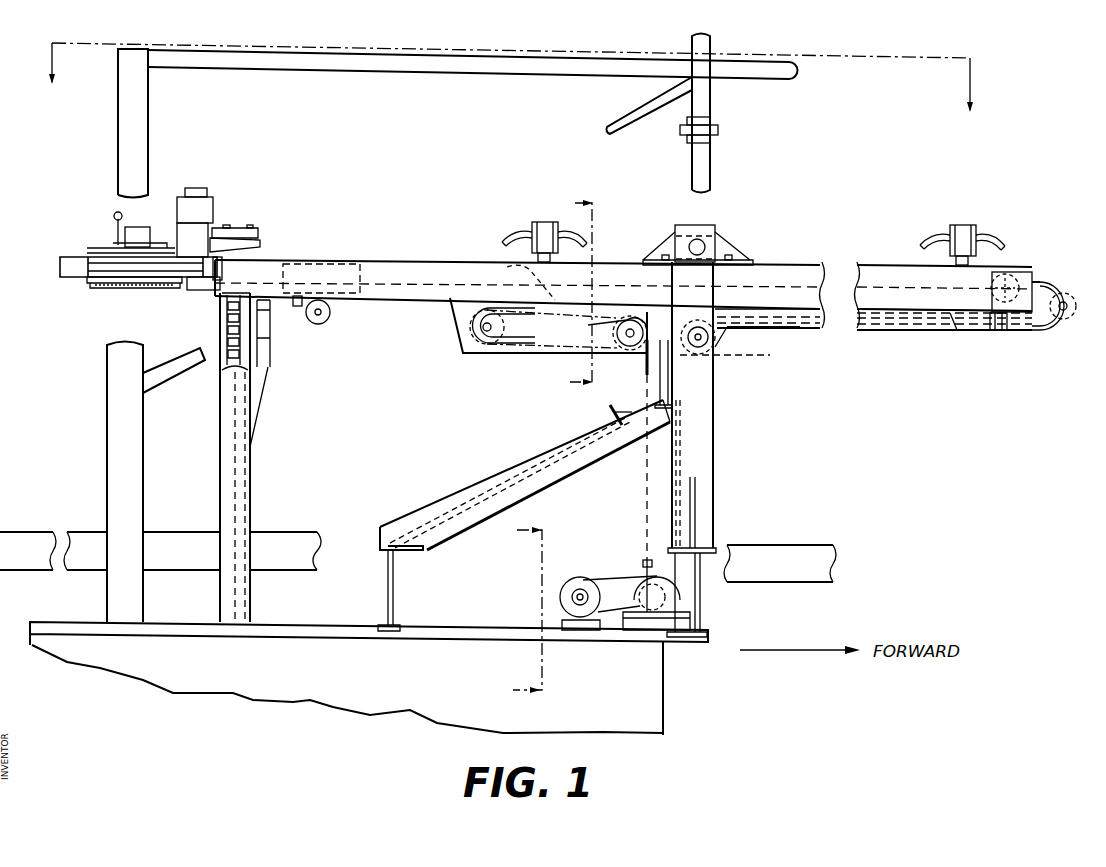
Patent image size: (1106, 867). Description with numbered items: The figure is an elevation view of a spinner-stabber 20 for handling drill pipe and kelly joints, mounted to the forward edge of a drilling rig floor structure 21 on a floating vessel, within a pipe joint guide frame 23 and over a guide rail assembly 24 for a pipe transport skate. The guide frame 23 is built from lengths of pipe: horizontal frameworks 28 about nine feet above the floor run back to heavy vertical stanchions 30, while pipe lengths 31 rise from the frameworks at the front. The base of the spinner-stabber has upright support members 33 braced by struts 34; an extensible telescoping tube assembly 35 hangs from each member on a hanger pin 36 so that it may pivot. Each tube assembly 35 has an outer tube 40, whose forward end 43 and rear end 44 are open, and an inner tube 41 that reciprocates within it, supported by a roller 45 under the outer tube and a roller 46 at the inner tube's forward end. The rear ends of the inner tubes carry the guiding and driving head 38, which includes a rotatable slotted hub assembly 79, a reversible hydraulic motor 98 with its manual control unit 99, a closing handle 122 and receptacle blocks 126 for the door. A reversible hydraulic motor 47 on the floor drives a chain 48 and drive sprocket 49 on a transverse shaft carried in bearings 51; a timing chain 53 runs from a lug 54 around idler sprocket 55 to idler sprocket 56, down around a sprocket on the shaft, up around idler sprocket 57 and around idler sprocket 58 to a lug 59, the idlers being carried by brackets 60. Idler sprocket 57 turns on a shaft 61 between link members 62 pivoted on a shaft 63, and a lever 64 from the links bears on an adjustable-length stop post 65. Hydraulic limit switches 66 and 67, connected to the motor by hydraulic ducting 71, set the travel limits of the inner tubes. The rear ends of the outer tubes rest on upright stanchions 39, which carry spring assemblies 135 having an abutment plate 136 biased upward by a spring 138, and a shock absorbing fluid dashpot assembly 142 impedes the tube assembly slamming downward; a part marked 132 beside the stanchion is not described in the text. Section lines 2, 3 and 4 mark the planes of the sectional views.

The spinner-stabber 20 is at (772, 222).
The drilling rig floor structure 21 is at (668, 690).
The pipe joint guide frame 23 is at (505, 56).
The guide rail assembly 24 is at (38, 532).
The elongate horizontal frameworks 28 is at (325, 67).
The heavy vertical stanchions 30 is at (130, 95).
The pipe lengths 31 is at (660, 258).
The structural upright support members 33 is at (705, 452).
The struts 34 is at (462, 482).
The extensible telescoping tube assembly 35 is at (396, 260).
The hanger pin 36 is at (700, 246).
The guiding and driving head 38 is at (78, 250).
The upright stanchions 39 is at (220, 468).
The outer elongate hollow tube 40 is at (416, 298).
The hollow elongate inner tube 41 is at (336, 262).
The forward end 43 is at (1030, 280).
The rear end 44 is at (220, 282).
The roller 45 is at (312, 322).
The roller 46 is at (1000, 274).
The reversible hydraulic motor 47 is at (574, 597).
The chain 48 is at (590, 580).
The drive sprocket 49 is at (657, 596).
The bearings 51 is at (682, 614).
The timing chain 53 is at (645, 566).
The lug 54 is at (506, 270).
The idler sprocket 55 is at (1055, 318).
The idler sprocket 56 is at (760, 330).
The idler sprocket 57 is at (645, 362).
The idler sprocket 58 is at (472, 347).
The lug 59 is at (508, 350).
The brackets 60 is at (455, 320).
The shaft 61 is at (630, 320).
The link members 62 is at (676, 325).
The shaft 63 is at (718, 345).
The lever 64 is at (648, 440).
The adjustable-length stop post 65 is at (672, 403).
The hydraulic limit switch 66 is at (963, 225).
The hydraulic limit switch 67 is at (545, 222).
The hydraulic ducting 71 is at (502, 240).
The hub assembly 79 is at (90, 288).
The reversible hydraulic motor 98 is at (213, 207).
The manually operated control unit 99 is at (255, 230).
The closing handle 122 is at (112, 217).
The receptacle blocks 126 is at (147, 225).
The rack 132 is at (225, 313).
The spring assemblies 135 is at (222, 336).
The abutment plate 136 is at (224, 299).
The spring 138 is at (226, 361).
The shock absorbing fluid dashpot assembly 142 is at (272, 372).
The section line 2- 2 is at (519, 608).
The section line 3- 3 is at (506, 91).
The section line 4- 4 is at (572, 291).